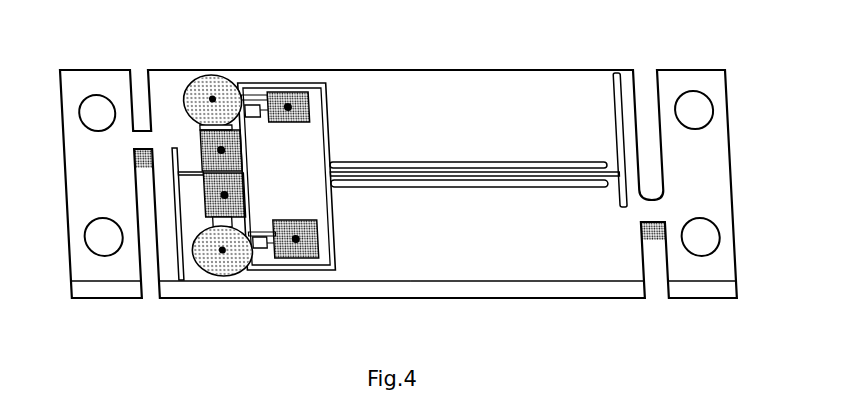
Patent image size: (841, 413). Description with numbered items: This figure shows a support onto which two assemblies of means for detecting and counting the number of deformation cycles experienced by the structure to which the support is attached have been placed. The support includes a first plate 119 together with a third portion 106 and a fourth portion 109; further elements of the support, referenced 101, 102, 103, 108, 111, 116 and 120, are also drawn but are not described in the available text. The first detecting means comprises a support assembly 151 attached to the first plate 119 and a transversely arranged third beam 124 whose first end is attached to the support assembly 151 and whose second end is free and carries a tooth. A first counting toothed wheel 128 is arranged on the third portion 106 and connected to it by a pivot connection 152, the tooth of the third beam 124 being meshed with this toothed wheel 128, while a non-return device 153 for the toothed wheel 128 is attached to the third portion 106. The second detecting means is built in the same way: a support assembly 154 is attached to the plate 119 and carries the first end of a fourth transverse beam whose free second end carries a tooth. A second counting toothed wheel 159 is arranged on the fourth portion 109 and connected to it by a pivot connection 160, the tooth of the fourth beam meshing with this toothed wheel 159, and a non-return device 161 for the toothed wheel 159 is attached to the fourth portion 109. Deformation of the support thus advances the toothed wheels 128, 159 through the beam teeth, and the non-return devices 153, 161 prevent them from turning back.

The sample holder / positioning device 101 is at (418, 70).
The left mounting block 102 is at (98, 202).
The right mounting block 103 is at (703, 160).
The third portion 106 is at (368, 115).
The slot / flexure hinge 108 is at (140, 135).
The fourth portion 109 is at (472, 250).
The anchor post 111 is at (626, 159).
The upper beam 116 is at (517, 163).
The first plate 119 is at (308, 193).
The lower beam 120 is at (527, 185).
The third beam 124 is at (257, 120).
The first counting toothed wheel 128 is at (203, 77).
The support assembly 151 is at (266, 100).
The pivot connection 152 is at (209, 96).
The non-return device 153 is at (199, 147).
The support assembly 154 is at (280, 255).
The second counting toothed wheel 159 is at (222, 277).
The pivot connection 160 is at (222, 252).
The non-return device 161 is at (241, 183).